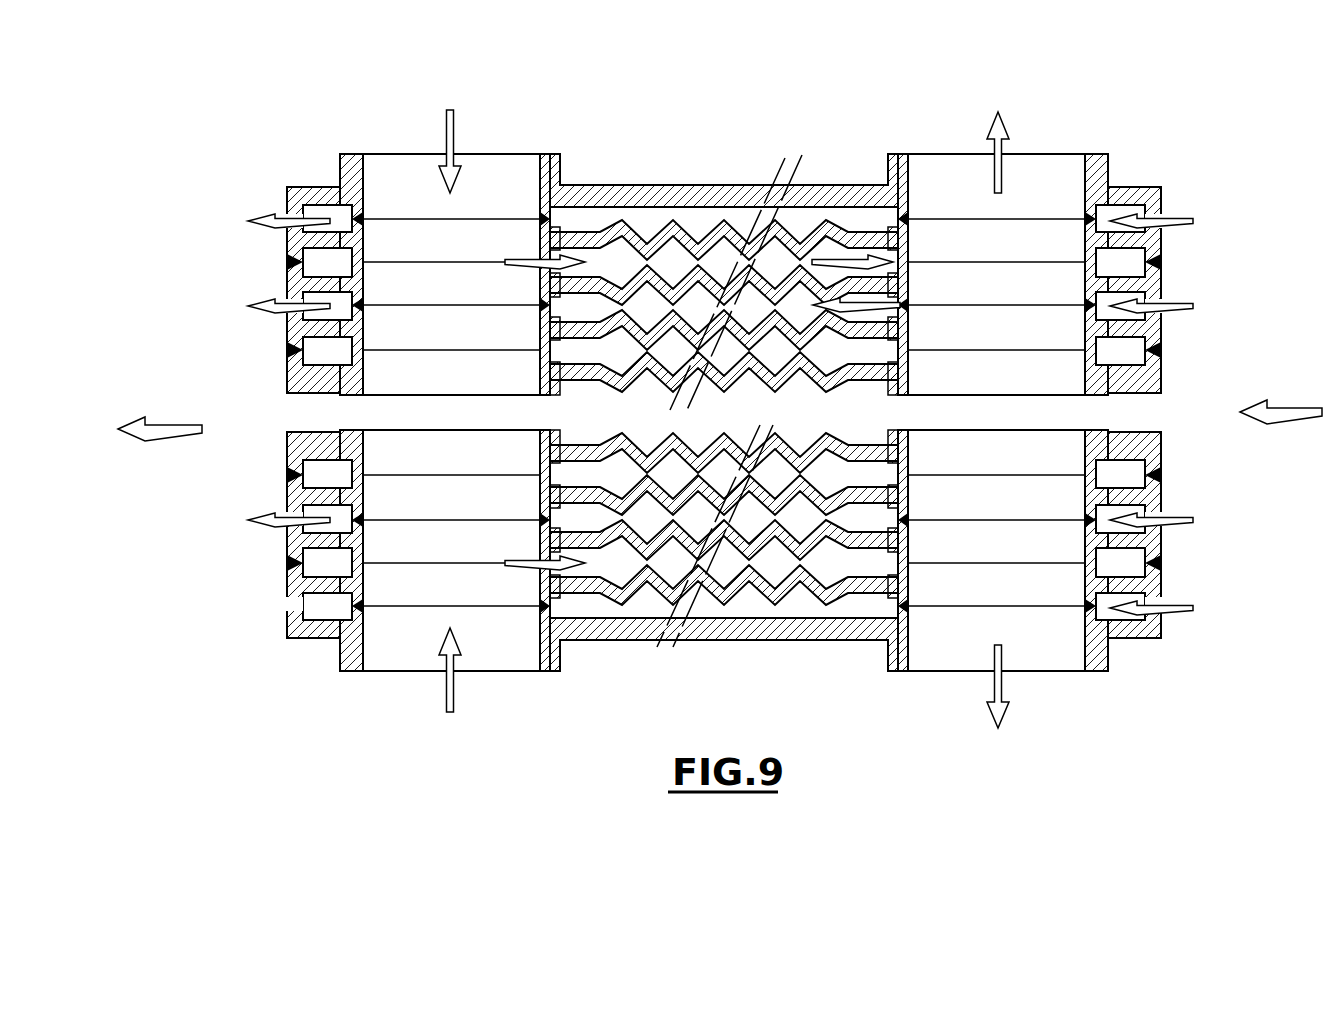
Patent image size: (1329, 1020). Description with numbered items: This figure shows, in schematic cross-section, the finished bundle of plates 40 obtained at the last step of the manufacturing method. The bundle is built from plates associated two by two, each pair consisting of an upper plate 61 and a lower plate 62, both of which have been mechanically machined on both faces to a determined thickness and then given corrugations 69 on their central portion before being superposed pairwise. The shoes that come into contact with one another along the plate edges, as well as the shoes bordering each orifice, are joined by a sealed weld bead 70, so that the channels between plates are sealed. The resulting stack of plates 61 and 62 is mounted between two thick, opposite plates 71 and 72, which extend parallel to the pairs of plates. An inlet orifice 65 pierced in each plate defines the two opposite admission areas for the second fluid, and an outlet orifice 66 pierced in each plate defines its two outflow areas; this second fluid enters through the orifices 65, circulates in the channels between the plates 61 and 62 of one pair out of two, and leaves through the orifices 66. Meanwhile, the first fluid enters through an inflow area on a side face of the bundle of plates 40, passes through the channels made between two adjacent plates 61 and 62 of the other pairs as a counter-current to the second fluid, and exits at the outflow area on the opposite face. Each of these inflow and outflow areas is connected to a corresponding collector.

The bundle of plates 40 is at (720, 403).
The upper plate 61 is at (724, 271).
The lower plate 62 is at (724, 560).
The inlet orifice 65 is at (397, 243).
The outlet orifice 66 is at (947, 243).
The corrugations 69 is at (724, 414).
The sealed weld bead 70 is at (287, 265).
The thick plate 71 is at (614, 204).
The thick plate 72 is at (617, 632).